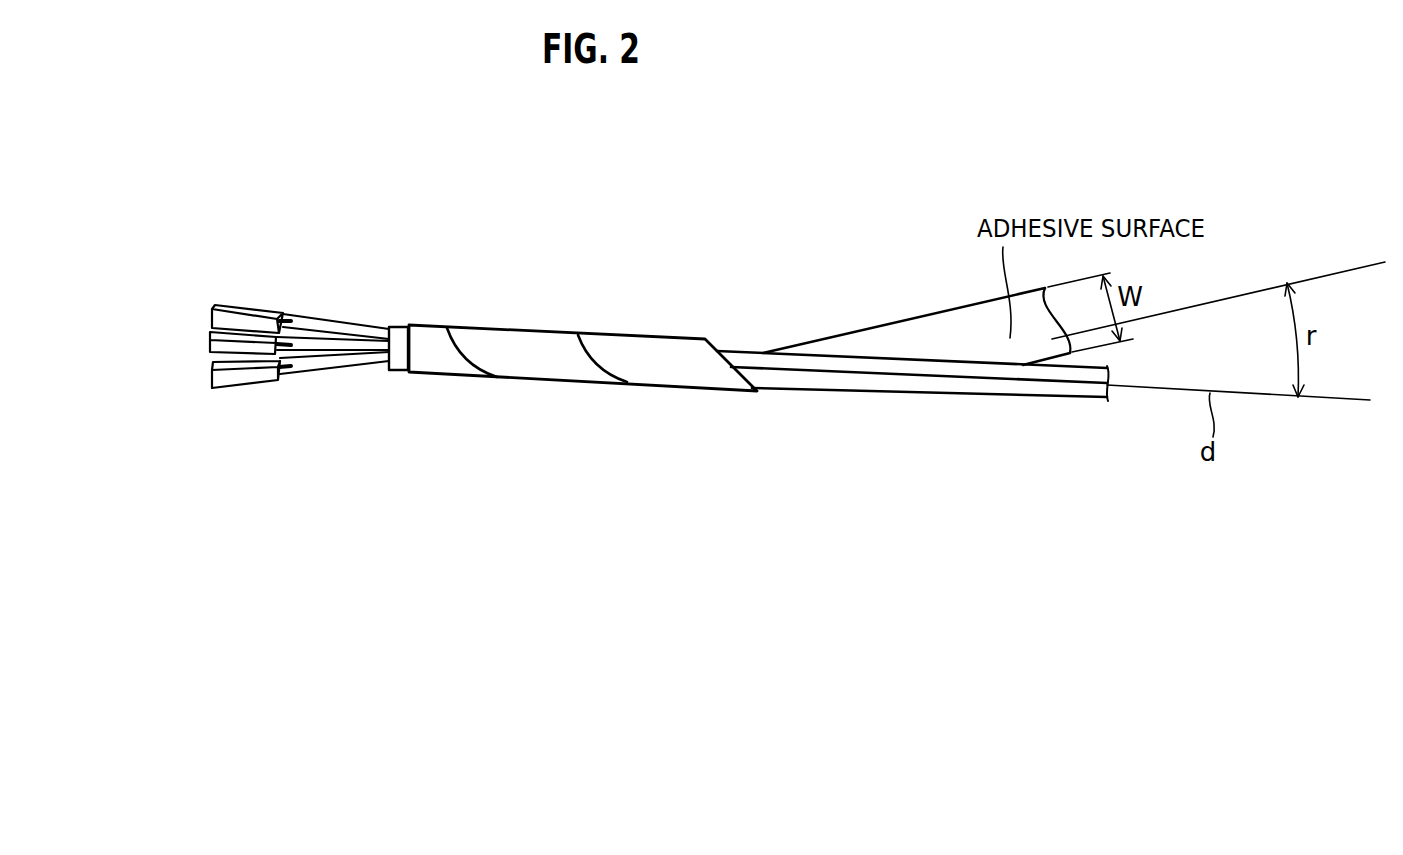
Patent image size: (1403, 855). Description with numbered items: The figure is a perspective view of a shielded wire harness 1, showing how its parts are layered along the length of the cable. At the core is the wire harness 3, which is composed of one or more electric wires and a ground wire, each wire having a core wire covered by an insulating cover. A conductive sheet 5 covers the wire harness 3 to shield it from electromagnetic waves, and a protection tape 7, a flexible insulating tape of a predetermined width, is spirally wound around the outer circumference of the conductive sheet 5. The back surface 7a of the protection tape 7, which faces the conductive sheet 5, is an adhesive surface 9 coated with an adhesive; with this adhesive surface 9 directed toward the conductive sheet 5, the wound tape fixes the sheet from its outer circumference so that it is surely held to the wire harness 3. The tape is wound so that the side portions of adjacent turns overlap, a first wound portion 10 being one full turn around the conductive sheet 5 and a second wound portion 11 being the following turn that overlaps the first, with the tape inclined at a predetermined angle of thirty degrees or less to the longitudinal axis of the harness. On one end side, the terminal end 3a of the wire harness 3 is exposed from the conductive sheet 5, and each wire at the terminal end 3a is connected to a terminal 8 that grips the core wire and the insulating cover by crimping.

The shielded wire harness 1 is at (798, 180).
The wire harness 3 is at (292, 336).
The terminal end 3a is at (287, 320).
The conductive sheet 5 is at (402, 333).
The protection tape 7 is at (637, 340).
The back surface 7a is at (877, 337).
The terminal 8 is at (245, 310).
The adhesive surface 9 is at (937, 328).
The first wound portion 10 is at (572, 373).
The second wound portion 11 is at (680, 375).